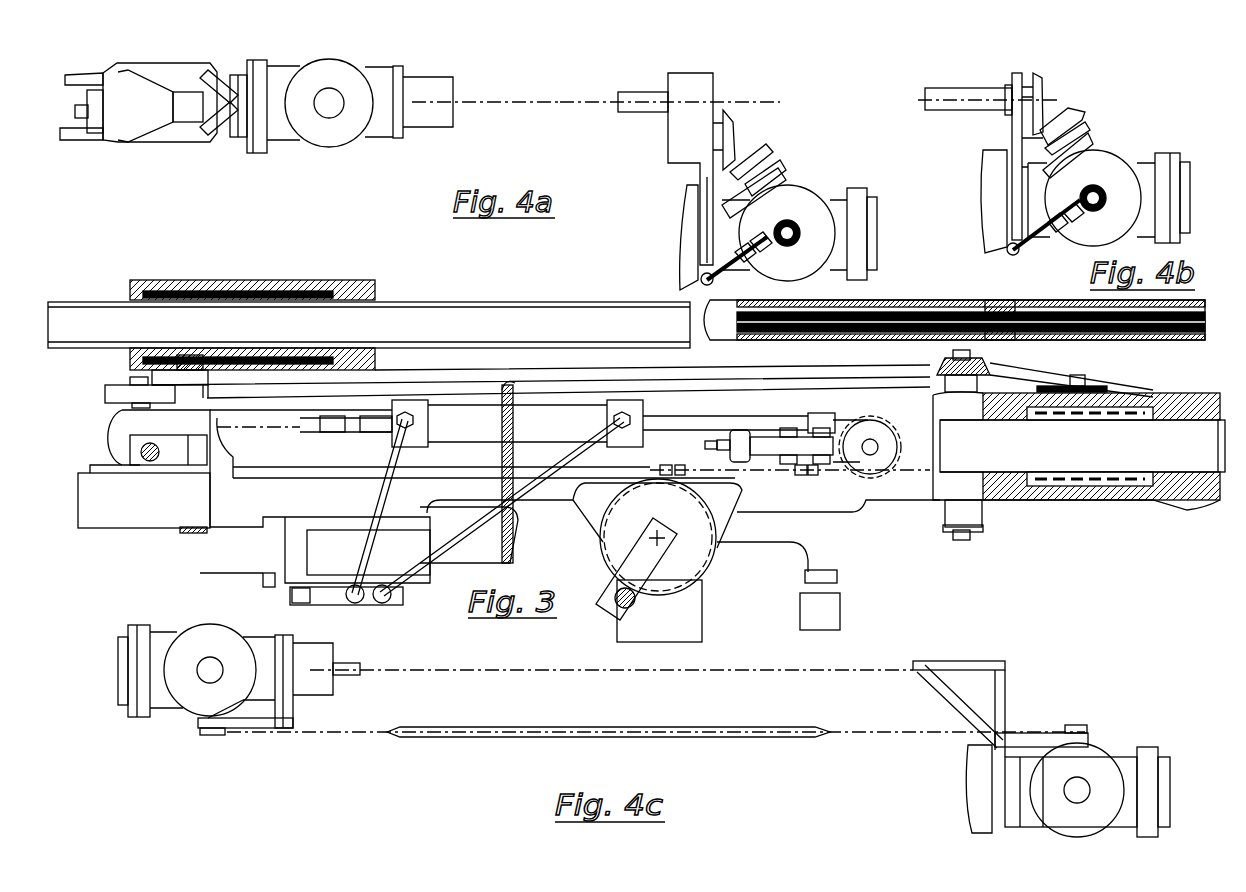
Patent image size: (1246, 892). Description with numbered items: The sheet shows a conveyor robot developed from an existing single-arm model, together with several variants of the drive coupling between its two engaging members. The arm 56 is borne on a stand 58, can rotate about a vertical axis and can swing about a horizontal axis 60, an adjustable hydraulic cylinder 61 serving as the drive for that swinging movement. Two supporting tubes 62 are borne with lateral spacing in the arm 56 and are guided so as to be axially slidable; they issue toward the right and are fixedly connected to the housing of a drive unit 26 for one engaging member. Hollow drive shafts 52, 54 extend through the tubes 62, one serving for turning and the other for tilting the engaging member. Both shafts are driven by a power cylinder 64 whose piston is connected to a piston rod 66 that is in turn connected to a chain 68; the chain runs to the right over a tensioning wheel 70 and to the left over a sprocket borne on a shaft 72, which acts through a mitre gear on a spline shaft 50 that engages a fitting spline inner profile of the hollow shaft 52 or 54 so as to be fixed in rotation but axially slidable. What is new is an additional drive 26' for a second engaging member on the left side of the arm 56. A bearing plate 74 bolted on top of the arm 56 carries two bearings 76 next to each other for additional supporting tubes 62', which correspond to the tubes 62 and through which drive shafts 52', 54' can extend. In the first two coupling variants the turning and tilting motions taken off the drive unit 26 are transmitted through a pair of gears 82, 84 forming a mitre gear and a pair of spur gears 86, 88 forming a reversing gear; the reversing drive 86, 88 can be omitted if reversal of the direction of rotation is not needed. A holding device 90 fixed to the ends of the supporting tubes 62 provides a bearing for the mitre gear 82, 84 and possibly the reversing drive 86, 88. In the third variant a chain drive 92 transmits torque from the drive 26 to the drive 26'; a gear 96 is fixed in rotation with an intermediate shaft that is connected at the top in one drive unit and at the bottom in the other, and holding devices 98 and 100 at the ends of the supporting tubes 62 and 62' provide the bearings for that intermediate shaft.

In FIG. 4A, the drive unit 26 is at (778, 227).
In FIG. 4B, the drive unit 26 is at (1085, 193).
In FIG. 4C, the drive unit 26 is at (1087, 746).
In FIG. 4A, the additional drive 26' is at (316, 137).
In FIG. 4C, the additional drive 26' is at (239, 712).
In FIG. 3, the spline shaft 50 is at (1162, 332).
In FIG. 3, the hollow drive shaft 52 is at (954, 295).
In FIG. 3, the hollow drive shaft 54 is at (954, 295).
In FIG. 4A, the drive shaft 52' is at (481, 95).
In FIG. 4A, the drive shaft 54' is at (481, 95).
In FIG. 3, the arm 56 is at (1023, 510).
In FIG. 3, the stand 58 is at (678, 603).
In FIG. 3, the horizontal axis 60 is at (670, 537).
In FIG. 3, the adjustable hydraulic cylinder 61 is at (813, 622).
In FIG. 3, the supporting tube 62 is at (1082, 503).
In FIG. 3, the additional supporting tube 62' is at (369, 299).
In FIG. 3, the power cylinder 64 is at (558, 420).
In FIG. 3, the piston rod 66 is at (693, 422).
In FIG. 3, the chain 68 is at (806, 501).
In FIG. 3, the tensioning wheel 70 is at (893, 450).
In FIG. 3, the shaft 72 is at (150, 462).
In FIG. 3, the bearing plate 74 is at (990, 363).
In FIG. 3, the bearing 76 is at (373, 290).
In FIG. 4A, the gear 82 is at (760, 153).
In FIG. 4B, the gear 82 is at (1073, 120).
In FIG. 4A, the gear 84 is at (728, 138).
In FIG. 4B, the gear 84 is at (1035, 92).
In FIG. 4A, the spur gear 86 is at (670, 124).
In FIG. 4A, the spur gear 88 is at (687, 138).
In FIG. 4A, the holding device 90 is at (713, 83).
In FIG. 4C, the chain drive 92 is at (885, 728).
In FIG. 4C, the gear 96 is at (213, 735).
In FIG. 4C, the holding device 98 is at (255, 722).
In FIG. 4C, the holding device 100 is at (1050, 740).